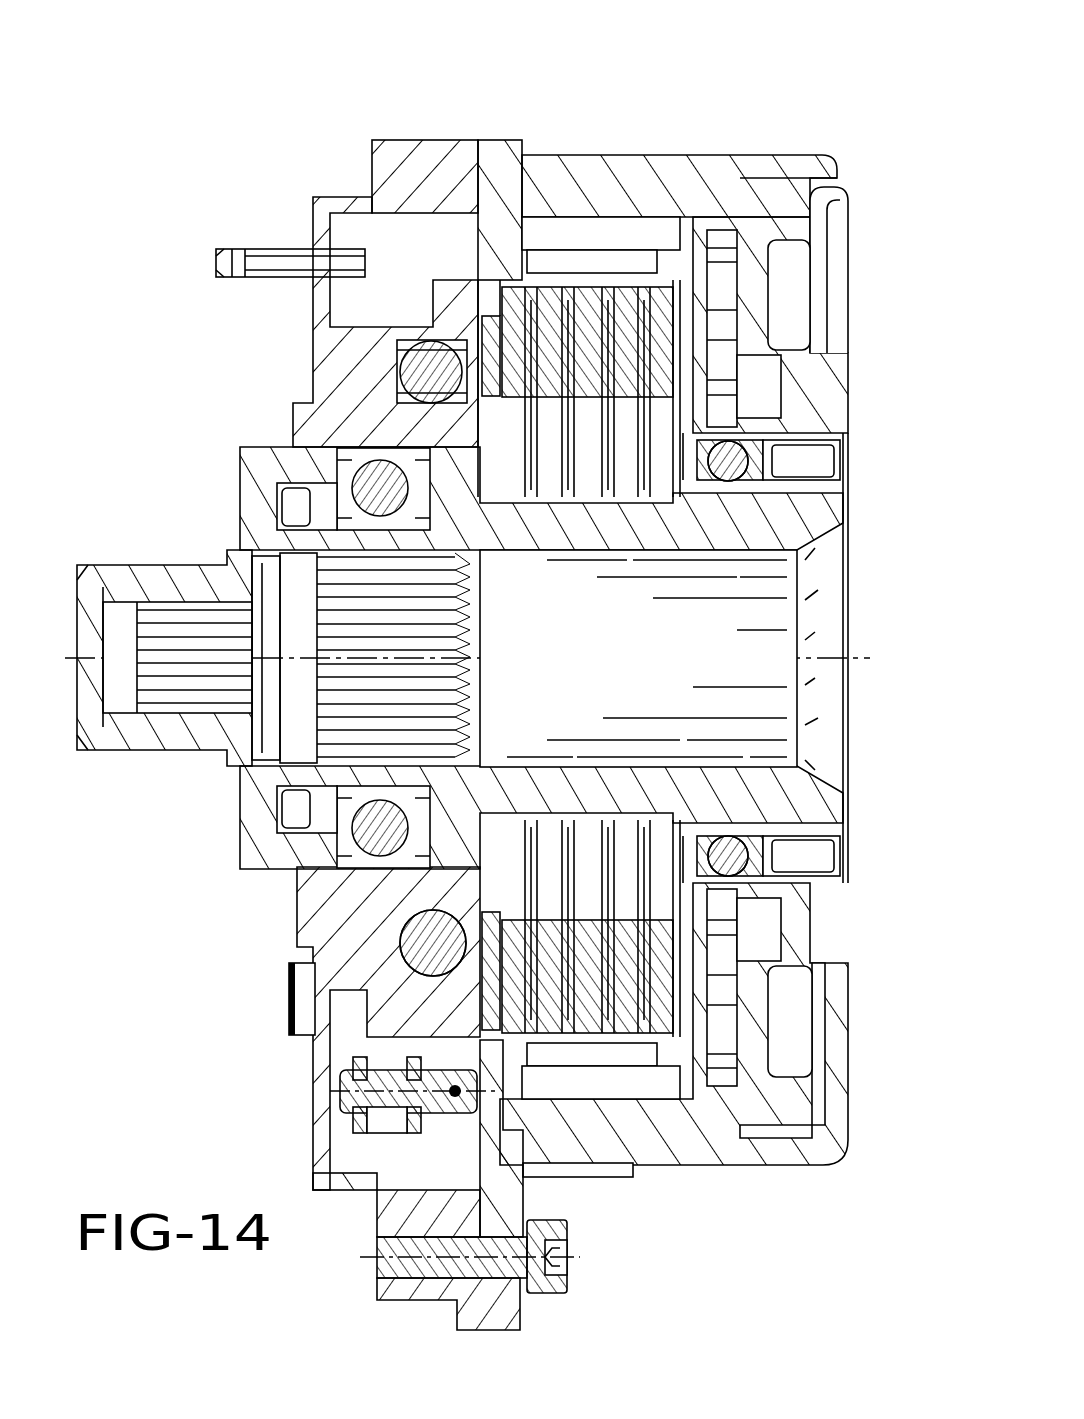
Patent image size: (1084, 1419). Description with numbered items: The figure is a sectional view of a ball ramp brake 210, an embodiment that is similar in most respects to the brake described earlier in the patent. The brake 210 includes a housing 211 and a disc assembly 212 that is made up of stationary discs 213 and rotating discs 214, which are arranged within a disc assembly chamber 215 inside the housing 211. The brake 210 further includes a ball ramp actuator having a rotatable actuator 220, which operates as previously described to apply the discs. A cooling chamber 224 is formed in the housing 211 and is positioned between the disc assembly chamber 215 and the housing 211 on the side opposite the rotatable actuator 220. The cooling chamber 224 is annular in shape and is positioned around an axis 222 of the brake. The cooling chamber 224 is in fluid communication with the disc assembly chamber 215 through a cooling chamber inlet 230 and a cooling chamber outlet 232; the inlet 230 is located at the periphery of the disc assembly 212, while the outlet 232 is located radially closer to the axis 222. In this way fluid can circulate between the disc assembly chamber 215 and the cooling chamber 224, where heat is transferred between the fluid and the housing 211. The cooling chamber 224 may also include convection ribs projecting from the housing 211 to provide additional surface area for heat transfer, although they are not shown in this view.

The ball ramp brake 210 is at (797, 116).
The housing 211 is at (780, 212).
The disc assembly 212 is at (511, 248).
The stationary discs 213 is at (644, 1030).
The rotating discs 214 is at (644, 292).
The disc assembly chamber 215 is at (491, 288).
The rotatable actuator 220 is at (442, 313).
The axis 222 is at (790, 660).
The cooling chamber 224 is at (722, 293).
The cooling chamber inlet 230 is at (697, 265).
The cooling chamber outlet 232 is at (710, 400).